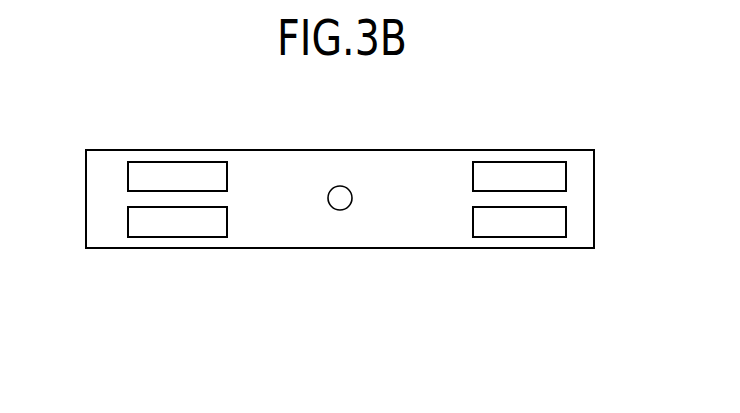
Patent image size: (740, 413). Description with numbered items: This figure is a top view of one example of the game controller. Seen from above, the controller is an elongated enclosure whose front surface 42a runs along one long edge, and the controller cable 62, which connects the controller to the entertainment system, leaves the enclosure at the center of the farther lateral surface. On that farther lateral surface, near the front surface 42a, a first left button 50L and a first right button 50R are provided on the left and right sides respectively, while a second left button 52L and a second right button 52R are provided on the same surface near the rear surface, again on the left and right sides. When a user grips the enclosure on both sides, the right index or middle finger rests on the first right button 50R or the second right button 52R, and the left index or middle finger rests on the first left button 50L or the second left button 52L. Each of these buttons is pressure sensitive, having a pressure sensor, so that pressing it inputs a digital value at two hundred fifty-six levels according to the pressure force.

The first right button 50R is at (175, 162).
The second right button 52R is at (177, 237).
The first left button 50L is at (518, 162).
The second left button 52L is at (520, 237).
The front surface 42a is at (340, 150).
The controller cable 62 is at (340, 211).